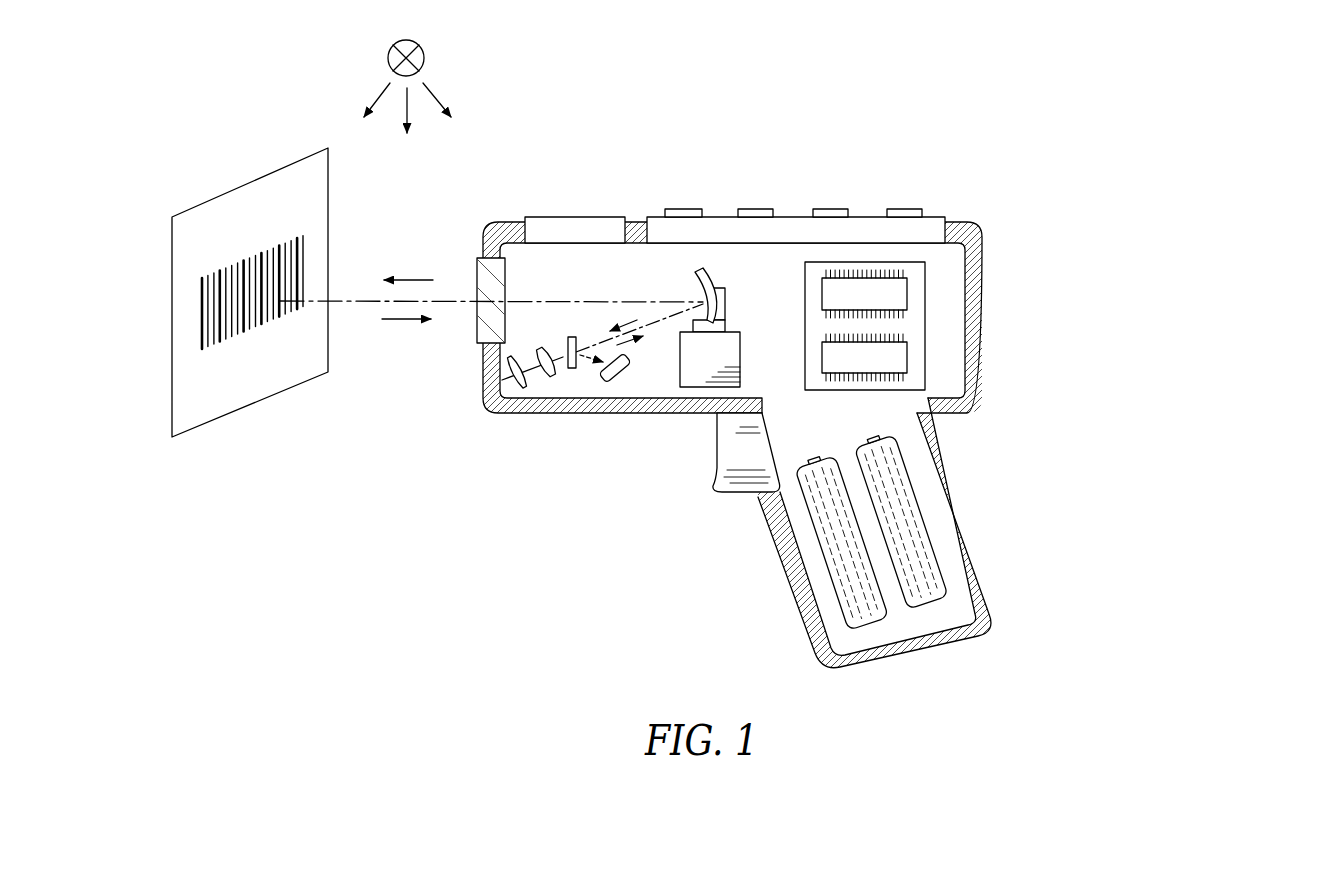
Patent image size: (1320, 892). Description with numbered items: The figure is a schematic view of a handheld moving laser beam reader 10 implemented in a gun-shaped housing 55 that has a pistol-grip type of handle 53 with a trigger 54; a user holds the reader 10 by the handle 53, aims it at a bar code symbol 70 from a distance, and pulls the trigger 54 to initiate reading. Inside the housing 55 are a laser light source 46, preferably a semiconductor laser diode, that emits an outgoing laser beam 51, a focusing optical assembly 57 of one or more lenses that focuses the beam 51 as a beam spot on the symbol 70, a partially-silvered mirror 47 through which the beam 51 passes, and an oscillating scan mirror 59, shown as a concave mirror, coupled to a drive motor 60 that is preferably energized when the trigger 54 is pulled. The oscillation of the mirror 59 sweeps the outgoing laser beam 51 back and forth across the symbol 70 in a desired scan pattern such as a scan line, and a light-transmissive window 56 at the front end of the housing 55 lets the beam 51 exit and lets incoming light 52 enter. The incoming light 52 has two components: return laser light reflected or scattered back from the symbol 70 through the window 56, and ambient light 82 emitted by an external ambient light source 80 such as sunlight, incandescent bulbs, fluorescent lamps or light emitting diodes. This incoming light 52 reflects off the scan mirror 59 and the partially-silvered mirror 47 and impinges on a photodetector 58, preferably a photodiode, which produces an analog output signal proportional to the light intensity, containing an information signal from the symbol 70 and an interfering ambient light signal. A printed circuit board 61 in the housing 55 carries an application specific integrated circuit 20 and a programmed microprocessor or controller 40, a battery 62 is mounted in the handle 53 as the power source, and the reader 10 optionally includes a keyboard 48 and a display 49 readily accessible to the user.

The moving laser beam reader 10 is at (750, 436).
The application specific integrated circuit 20 is at (897, 355).
The microprocessor 40 is at (897, 292).
The laser light source 46 is at (515, 383).
The partially-silvered mirror 47 is at (573, 369).
The keyboard 48 is at (875, 223).
The display 49 is at (551, 219).
The outgoing laser beam 51 is at (418, 280).
The incoming light 52 is at (400, 320).
The handle 53 is at (791, 585).
The trigger 54 is at (735, 496).
The housing 55 is at (980, 393).
The light-transmissive window 56 is at (480, 263).
The focusing optical assembly 57 is at (553, 378).
The photodetector 58 is at (621, 378).
The oscillating scan mirror 59 is at (694, 282).
The drive motor 60 is at (692, 378).
The printed circuit board 61 is at (1012, 335).
The battery 62 is at (930, 607).
The bar code symbol 70 is at (292, 238).
The ambient light source 80 is at (421, 58).
The ambient light 82 is at (408, 113).